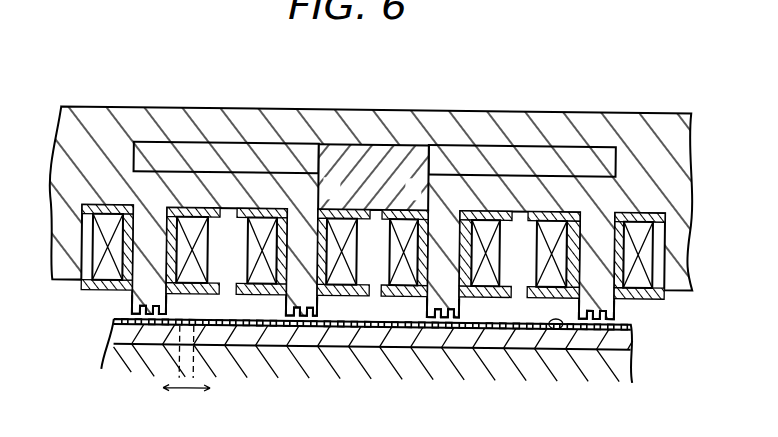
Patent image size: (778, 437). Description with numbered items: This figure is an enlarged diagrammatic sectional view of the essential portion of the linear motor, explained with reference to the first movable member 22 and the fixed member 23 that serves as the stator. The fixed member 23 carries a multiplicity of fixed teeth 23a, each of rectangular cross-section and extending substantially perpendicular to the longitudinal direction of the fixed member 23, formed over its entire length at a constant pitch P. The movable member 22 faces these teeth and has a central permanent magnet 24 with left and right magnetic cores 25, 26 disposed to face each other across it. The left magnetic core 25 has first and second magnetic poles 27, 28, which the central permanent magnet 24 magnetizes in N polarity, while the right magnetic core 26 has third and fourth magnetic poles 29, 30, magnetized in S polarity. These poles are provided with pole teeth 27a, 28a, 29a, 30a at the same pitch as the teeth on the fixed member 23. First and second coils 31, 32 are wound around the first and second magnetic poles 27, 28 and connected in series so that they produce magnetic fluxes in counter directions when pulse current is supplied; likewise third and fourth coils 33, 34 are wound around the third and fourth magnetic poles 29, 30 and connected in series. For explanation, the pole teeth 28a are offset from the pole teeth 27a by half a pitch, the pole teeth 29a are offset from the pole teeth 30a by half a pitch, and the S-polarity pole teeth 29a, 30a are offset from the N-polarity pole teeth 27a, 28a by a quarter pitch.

The first movable member 22 is at (105, 110).
The fixed member 23 is at (118, 343).
The fixed teeth 23a is at (552, 327).
The central permanent magnet 24 is at (392, 146).
The magnetic core 25 is at (233, 168).
The magnetic core 26 is at (552, 172).
The first magnetic pole 27 is at (133, 301).
The pole teeth 27a is at (152, 327).
The second magnetic pole 28 is at (313, 313).
The pole teeth 28a is at (302, 327).
The third magnetic pole 29 is at (428, 316).
The pole teeth 29a is at (449, 327).
The fourth magnetic pole 30 is at (615, 305).
The pole teeth 30a is at (600, 327).
The first coil 31 is at (86, 246).
The second coil 32 is at (345, 227).
The third coil 33 is at (396, 225).
The fourth coil 34 is at (563, 236).
The pitch P is at (187, 372).